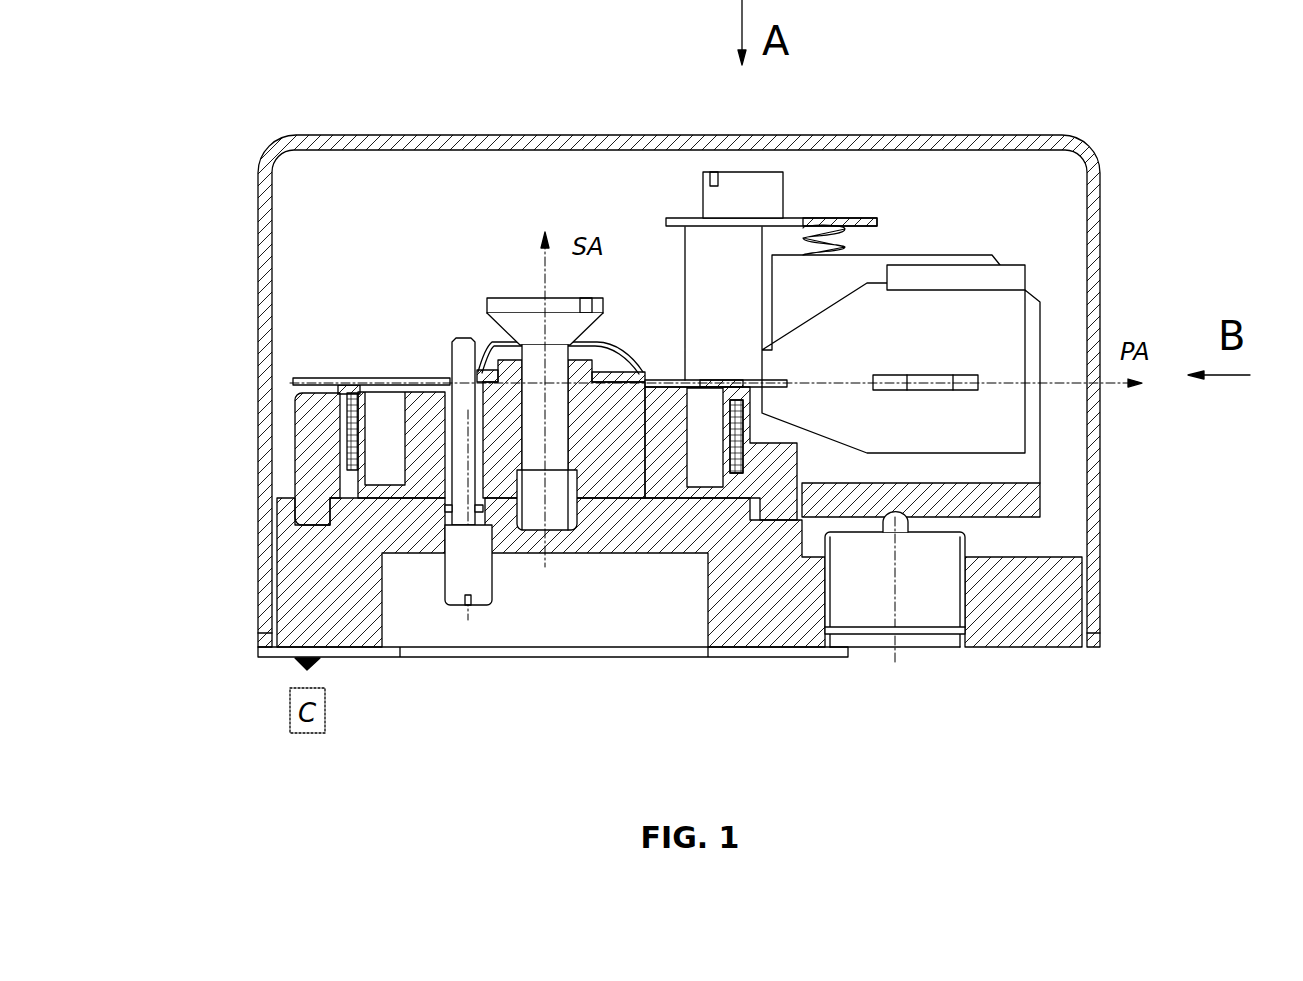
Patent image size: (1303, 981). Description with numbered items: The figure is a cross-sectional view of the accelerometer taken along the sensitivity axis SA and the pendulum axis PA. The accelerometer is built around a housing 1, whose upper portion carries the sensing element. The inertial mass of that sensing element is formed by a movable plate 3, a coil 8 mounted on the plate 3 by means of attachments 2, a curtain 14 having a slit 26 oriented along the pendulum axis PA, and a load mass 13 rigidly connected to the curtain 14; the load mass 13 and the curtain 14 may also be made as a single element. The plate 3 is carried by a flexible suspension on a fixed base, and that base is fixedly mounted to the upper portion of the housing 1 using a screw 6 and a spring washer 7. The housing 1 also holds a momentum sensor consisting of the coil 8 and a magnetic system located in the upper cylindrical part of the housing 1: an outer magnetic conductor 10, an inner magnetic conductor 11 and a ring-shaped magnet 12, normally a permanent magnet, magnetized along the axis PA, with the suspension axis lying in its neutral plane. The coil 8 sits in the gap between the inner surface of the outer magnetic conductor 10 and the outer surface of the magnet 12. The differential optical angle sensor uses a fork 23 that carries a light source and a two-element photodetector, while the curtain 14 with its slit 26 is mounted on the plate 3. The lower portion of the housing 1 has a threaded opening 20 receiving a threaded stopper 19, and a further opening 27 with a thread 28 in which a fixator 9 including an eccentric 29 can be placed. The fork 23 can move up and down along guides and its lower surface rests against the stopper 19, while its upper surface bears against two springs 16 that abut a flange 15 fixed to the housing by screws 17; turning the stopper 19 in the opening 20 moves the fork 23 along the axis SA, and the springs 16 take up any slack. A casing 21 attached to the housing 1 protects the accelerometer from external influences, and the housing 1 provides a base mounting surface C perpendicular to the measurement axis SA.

The housing 1 is at (325, 567).
The attachments 2 is at (347, 393).
The movable plate 3 is at (340, 382).
The screw 6 is at (527, 327).
The spring washer 7 is at (493, 340).
The coil 8 is at (382, 458).
The fixator 9 is at (460, 580).
The outer magnetic conductor 10 is at (317, 440).
The inner magnetic conductor 11 is at (662, 470).
The ring-shaped magnet 12 is at (353, 453).
The load mass 13 is at (1002, 277).
The curtain 14 is at (988, 328).
The flange 15 is at (872, 222).
The springs 16 is at (822, 238).
The screws 17 is at (727, 195).
The threaded stopper 19 is at (872, 590).
The threaded opening 20 is at (964, 632).
The casing 21 is at (535, 143).
The fork 23 is at (1015, 466).
The slit 26 is at (972, 389).
The opening 27 is at (485, 470).
The thread 28 is at (492, 517).
The eccentric 29 is at (462, 362).